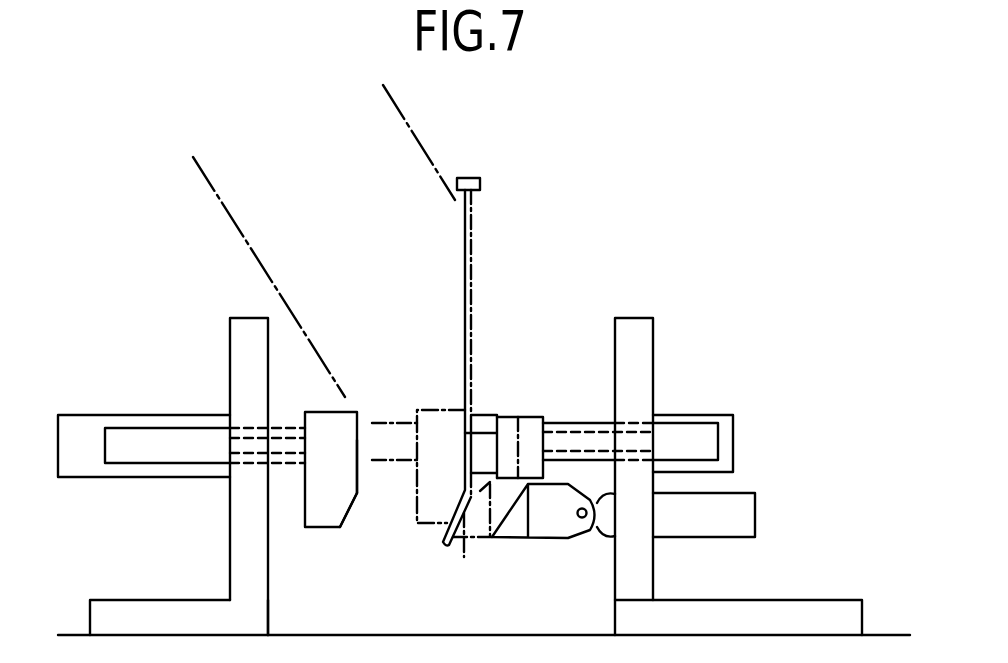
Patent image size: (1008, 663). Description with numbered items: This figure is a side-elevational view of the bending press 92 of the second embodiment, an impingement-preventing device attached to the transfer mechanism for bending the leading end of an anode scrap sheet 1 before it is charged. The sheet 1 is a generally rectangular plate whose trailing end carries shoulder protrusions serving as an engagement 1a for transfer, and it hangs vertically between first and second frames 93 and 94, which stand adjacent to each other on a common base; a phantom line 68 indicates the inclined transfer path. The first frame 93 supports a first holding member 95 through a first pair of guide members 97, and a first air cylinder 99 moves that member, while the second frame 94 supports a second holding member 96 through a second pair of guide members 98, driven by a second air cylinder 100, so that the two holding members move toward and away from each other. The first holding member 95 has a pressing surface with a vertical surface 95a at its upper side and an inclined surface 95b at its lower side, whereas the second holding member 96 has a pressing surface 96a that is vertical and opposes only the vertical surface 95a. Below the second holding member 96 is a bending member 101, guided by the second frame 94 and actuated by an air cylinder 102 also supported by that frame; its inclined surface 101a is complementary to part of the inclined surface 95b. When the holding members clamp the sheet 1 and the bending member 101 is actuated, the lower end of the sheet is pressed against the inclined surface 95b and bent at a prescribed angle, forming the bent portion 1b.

The anode scrap sheet 1 is at (472, 252).
The engagement 1a is at (468, 178).
The bent portion 1b is at (474, 555).
The guide line 68 is at (210, 183).
The bending press 92 is at (588, 277).
The first frame 93 is at (232, 357).
The second frame 94 is at (642, 358).
The first holding member 95 is at (313, 492).
The vertical surface 95a is at (358, 473).
The inclined surface 95b is at (352, 510).
The second holding member 96 is at (514, 428).
The pressing surface 96a is at (463, 432).
The first pair of guide members 97 is at (160, 438).
The second pair of guide members 98 is at (687, 428).
The first air cylinder 99 is at (95, 468).
The second air cylinder 100 is at (727, 423).
The bending member 101 is at (517, 527).
The inclined surface 101a is at (489, 530).
The air cylinder 102 is at (745, 508).